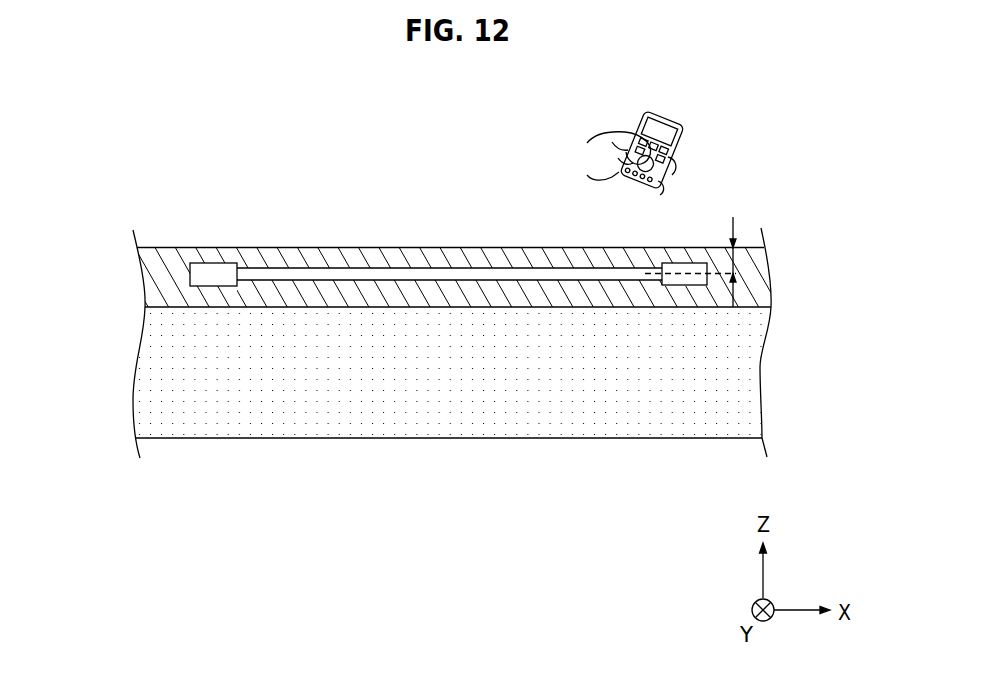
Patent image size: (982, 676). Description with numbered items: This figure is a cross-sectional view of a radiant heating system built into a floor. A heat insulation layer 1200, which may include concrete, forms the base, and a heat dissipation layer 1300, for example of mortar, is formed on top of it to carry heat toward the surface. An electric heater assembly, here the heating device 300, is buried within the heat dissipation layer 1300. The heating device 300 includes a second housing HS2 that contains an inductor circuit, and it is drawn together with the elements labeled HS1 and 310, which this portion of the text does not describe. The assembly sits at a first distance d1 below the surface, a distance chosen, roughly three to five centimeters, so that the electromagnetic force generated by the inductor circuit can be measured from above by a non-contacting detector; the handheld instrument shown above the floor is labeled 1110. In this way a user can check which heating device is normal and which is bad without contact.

The measuring device (multimeter) 1110 is at (681, 118).
The heating device 300 is at (399, 239).
The sensing wire 310 is at (282, 267).
The first heat sensor HS1 is at (197, 263).
The second housing HS2 is at (684, 263).
The first distance d1 is at (735, 262).
The heat dissipation layer 1300 is at (754, 287).
The heat insulation layer 1200 is at (742, 372).